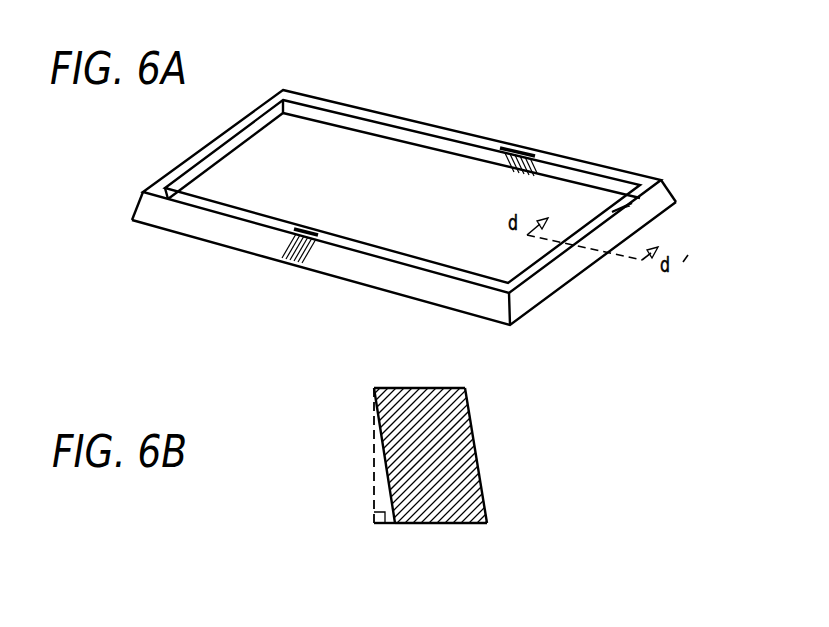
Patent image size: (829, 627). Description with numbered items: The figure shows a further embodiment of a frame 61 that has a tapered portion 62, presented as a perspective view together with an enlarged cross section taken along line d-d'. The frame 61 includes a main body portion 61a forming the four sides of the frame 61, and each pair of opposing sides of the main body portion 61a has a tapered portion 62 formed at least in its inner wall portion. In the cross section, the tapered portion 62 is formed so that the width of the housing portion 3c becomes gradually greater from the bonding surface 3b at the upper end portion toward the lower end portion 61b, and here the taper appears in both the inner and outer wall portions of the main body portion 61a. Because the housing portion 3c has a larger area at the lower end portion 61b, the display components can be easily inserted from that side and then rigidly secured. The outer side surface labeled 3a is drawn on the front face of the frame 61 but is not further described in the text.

In FIG. 6A, the frame 61 is at (429, 199).
In FIG. 6B, the frame 61 is at (466, 484).
In FIG. 6A, the main body portion 61a is at (418, 121).
In FIG. 6A, the lower end portion 61b is at (552, 295).
In FIG. 6B, the lower end portion 61b is at (430, 523).
In FIG. 6A, the tapered portion 62 is at (557, 170).
In FIG. 6B, the tapered portion 62 is at (385, 468).
In FIG. 6A, the outer side surface 3a is at (525, 300).
In FIG. 6A, the bonding surface 3b is at (612, 211).
In FIG. 6B, the bonding surface 3b is at (420, 388).
In FIG. 6A, the housing portion 3c is at (448, 175).